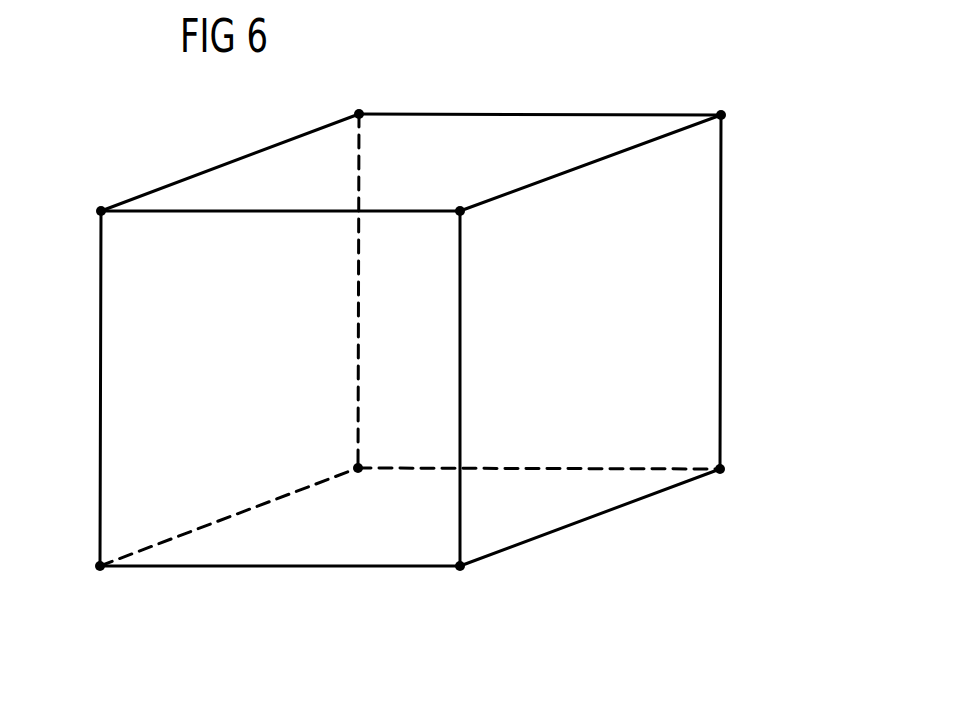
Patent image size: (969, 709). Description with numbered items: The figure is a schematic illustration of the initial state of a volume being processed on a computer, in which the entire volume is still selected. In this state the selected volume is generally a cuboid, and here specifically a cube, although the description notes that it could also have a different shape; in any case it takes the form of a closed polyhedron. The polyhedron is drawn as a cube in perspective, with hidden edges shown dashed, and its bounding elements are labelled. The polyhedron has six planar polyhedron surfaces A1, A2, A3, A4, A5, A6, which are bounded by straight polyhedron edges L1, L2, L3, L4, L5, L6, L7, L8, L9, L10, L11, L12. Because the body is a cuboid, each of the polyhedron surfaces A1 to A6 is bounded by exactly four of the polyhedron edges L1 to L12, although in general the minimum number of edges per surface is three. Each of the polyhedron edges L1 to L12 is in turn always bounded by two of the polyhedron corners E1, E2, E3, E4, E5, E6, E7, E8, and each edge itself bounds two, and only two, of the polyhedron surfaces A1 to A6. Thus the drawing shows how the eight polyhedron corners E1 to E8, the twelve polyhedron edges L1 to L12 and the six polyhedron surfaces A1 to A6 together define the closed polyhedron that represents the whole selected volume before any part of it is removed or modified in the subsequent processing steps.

The polyhedron corner E1 is at (359, 114).
The polyhedron corner E2 is at (101, 211).
The polyhedron corner E3 is at (460, 211).
The polyhedron corner E4 is at (721, 115).
The polyhedron corner E5 is at (358, 468).
The polyhedron corner E6 is at (100, 566).
The polyhedron corner E7 is at (460, 566).
The polyhedron corner E8 is at (720, 469).
The polyhedron edge L1 is at (99, 335).
The polyhedron edge L2 is at (247, 568).
The polyhedron edge L3 is at (458, 520).
The polyhedron edge L4 is at (217, 211).
The polyhedron edge L5 is at (257, 155).
The polyhedron edge L6 is at (593, 167).
The polyhedron edge L7 is at (278, 498).
The polyhedron edge L8 is at (593, 515).
The polyhedron edge L9 is at (357, 320).
The polyhedron edge L10 is at (552, 468).
The polyhedron edge L11 is at (722, 283).
The polyhedron edge L12 is at (513, 117).
The polyhedron surface A1 is at (153, 425).
The polyhedron surface A2 is at (665, 360).
The polyhedron surface A3 is at (438, 162).
The polyhedron surface A4 is at (582, 90).
The polyhedron surface A5 is at (170, 140).
The polyhedron surface A6 is at (347, 592).